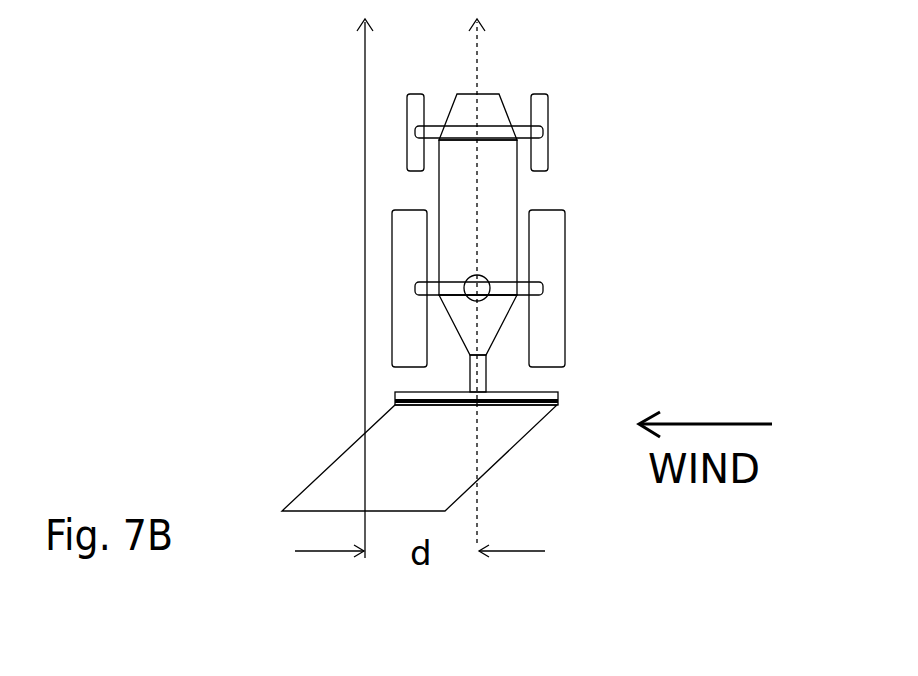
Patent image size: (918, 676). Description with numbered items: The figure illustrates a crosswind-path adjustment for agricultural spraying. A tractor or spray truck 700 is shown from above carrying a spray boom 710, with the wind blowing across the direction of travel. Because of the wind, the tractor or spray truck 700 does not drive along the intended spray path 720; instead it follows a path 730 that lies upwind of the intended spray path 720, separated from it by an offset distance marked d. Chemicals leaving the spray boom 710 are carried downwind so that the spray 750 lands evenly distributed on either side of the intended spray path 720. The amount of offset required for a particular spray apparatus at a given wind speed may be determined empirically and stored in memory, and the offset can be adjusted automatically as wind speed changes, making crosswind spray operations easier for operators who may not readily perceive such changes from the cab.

The tractor or spray truck 700 is at (505, 190).
The spray boom 710 is at (558, 393).
The intended spray path 720 is at (364, 87).
The path 730 is at (479, 55).
The spray 750 is at (327, 485).